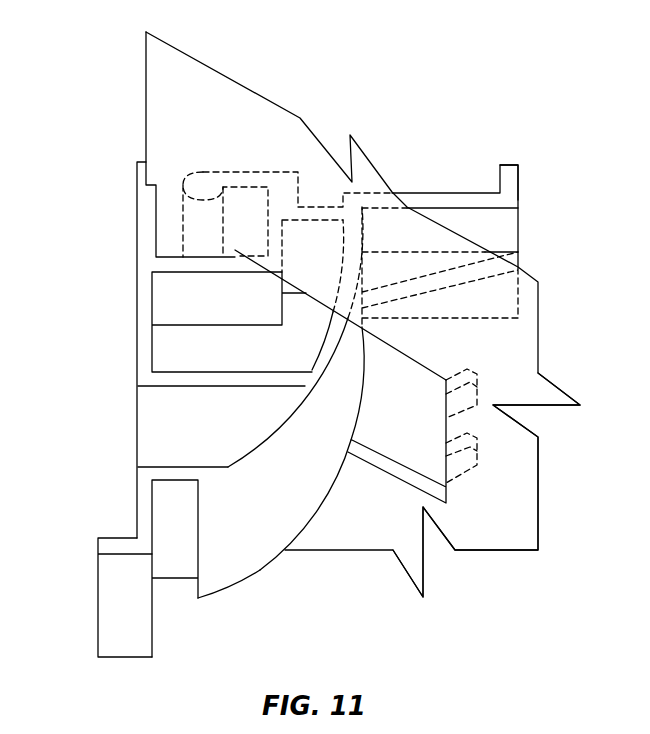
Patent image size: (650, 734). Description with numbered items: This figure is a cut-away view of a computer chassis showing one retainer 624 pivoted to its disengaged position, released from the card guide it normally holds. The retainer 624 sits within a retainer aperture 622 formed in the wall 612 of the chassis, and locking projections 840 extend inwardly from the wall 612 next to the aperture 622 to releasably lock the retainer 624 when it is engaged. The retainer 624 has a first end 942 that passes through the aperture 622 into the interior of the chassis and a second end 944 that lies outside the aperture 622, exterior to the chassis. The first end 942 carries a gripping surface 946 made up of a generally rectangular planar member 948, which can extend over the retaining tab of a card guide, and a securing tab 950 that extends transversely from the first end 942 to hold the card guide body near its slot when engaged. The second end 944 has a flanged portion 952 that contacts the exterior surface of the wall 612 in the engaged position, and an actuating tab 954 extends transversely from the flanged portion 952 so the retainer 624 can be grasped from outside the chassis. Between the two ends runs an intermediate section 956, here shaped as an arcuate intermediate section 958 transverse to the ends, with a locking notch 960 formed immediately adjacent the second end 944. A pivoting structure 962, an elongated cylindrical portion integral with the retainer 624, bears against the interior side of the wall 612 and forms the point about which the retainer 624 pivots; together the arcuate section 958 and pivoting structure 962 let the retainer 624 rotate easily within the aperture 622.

The wall 612 is at (520, 517).
The retainer aperture 622 is at (418, 412).
The retainer 624 is at (333, 498).
The locking projections 840 is at (478, 396).
The first end 942 is at (523, 317).
The second end 944 is at (137, 338).
The gripping surface 946 is at (443, 193).
The generally rectangular planar member 948 is at (508, 235).
The securing tab 950 is at (518, 183).
The flanged portion 952 is at (137, 255).
The actuating tab 954 is at (105, 632).
The intermediate section 956 is at (258, 578).
The arcuate intermediate section 958 is at (253, 562).
The locking notch 960 is at (178, 568).
The pivoting structure 962 is at (204, 178).